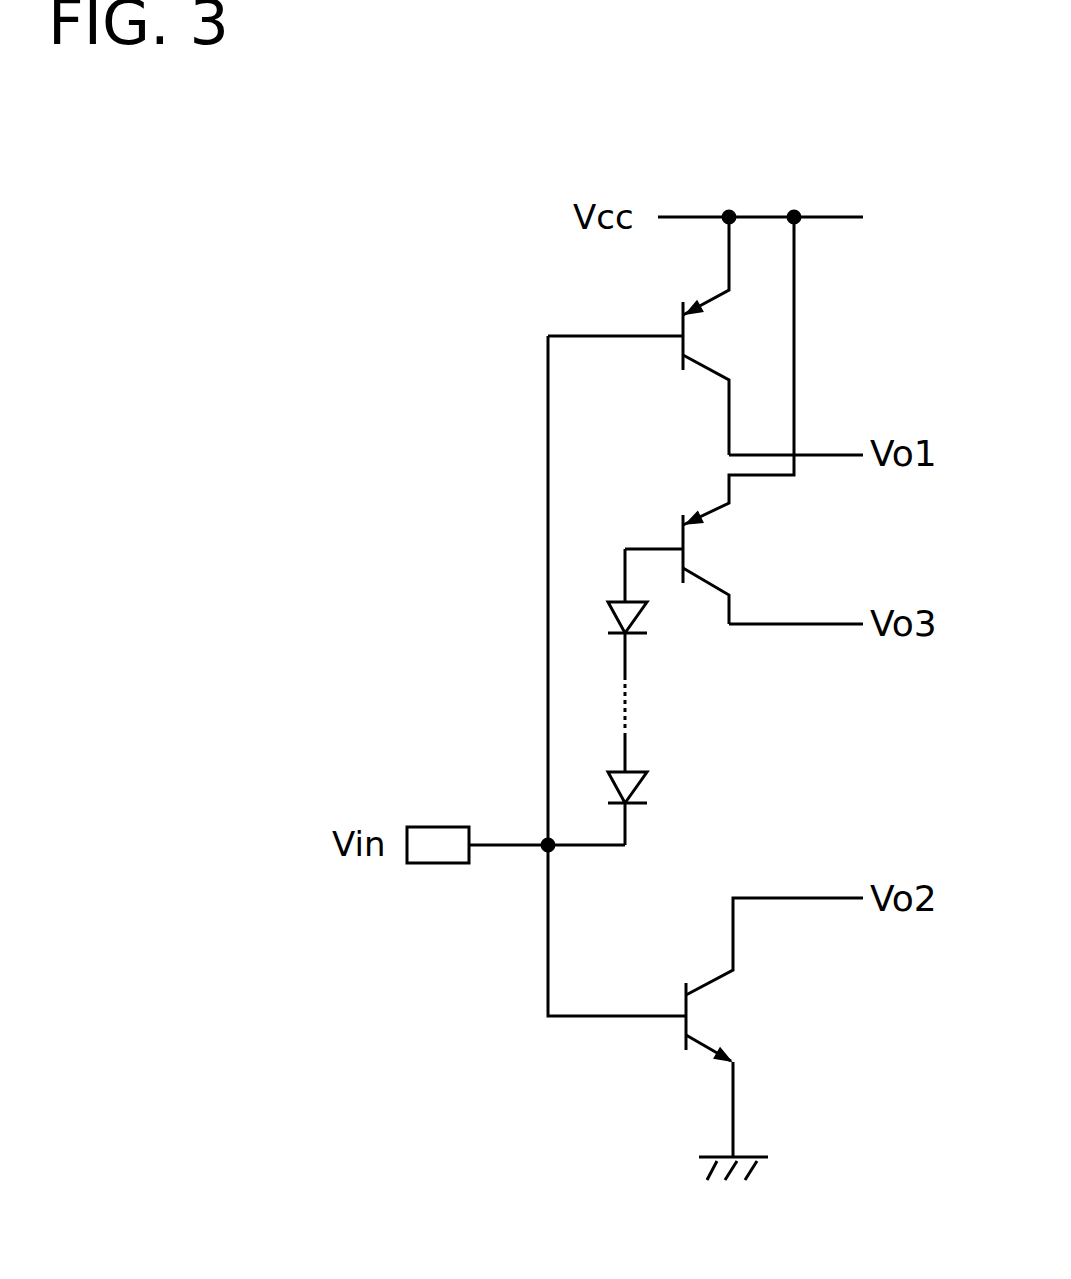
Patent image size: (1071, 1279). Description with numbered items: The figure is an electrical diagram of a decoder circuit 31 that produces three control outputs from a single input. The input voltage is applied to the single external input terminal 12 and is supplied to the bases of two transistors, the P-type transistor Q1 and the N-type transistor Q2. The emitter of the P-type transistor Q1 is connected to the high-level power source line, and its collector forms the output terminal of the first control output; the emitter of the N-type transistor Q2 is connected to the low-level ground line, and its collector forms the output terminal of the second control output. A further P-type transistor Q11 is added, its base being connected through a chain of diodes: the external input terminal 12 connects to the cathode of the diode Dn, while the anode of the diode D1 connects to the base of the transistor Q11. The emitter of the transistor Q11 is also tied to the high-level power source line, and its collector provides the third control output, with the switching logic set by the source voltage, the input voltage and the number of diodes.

The decoder circuit 31 is at (406, 284).
The external input terminal 12 is at (438, 863).
The P-type transistor Q1 is at (680, 322).
The P-type transistor Q11 is at (682, 530).
The diode D1 is at (640, 622).
The diode Dn is at (650, 782).
The N-type transistor Q2 is at (683, 1030).